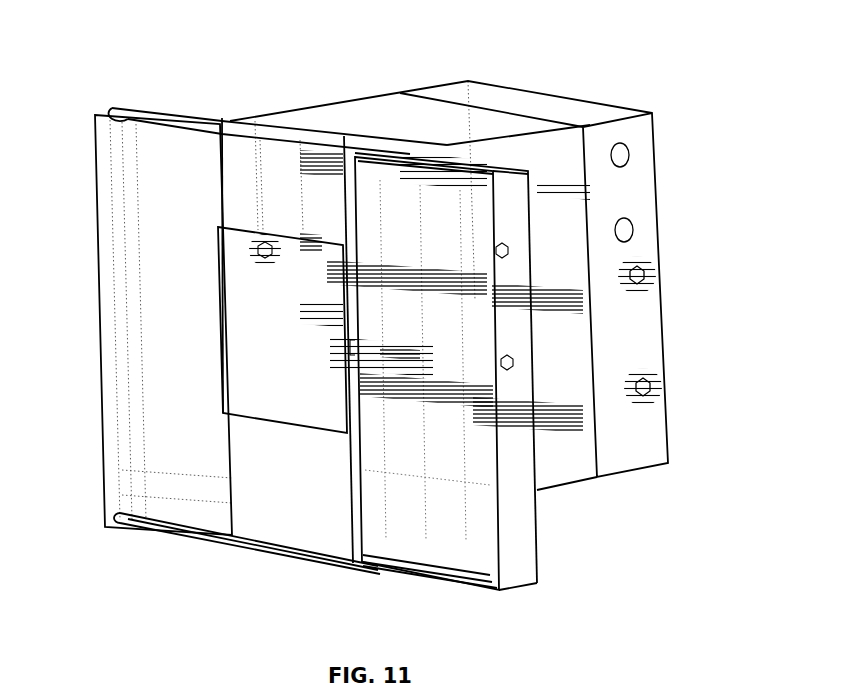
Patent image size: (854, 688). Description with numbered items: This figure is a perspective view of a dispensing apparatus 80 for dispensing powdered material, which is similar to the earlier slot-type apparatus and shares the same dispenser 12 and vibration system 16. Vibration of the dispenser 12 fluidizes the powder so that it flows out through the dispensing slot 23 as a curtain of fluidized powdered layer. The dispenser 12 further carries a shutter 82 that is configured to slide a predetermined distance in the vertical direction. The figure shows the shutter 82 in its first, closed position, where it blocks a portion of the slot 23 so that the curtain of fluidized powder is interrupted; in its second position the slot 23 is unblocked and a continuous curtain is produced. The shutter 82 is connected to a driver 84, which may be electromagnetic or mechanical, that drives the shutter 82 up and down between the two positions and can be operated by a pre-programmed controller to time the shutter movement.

The dispensing apparatus 80 is at (565, 55).
The dispenser 12 is at (112, 374).
The vibration system 16 is at (659, 422).
The dispensing slot 23 is at (158, 531).
The shutter 82 is at (296, 522).
The driver 84 is at (268, 325).